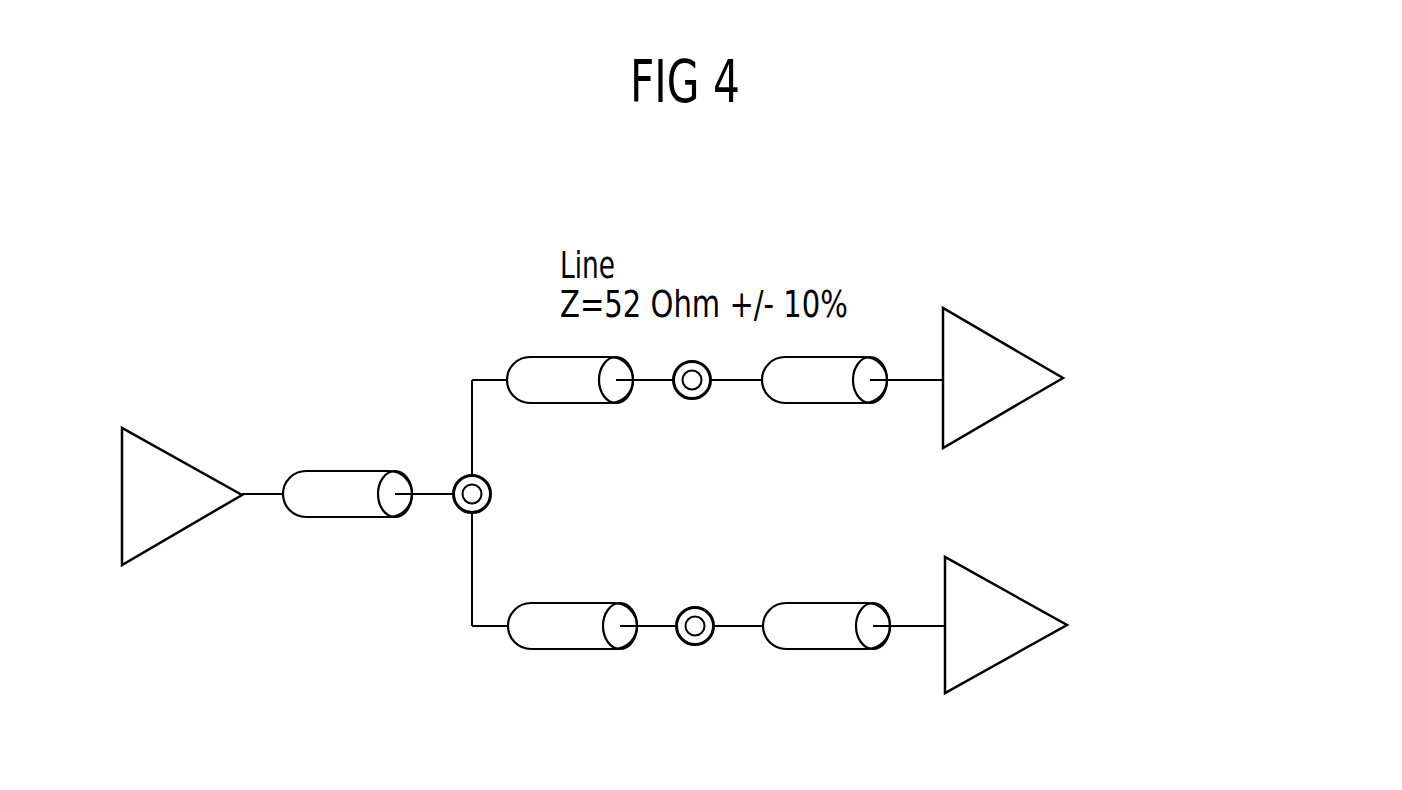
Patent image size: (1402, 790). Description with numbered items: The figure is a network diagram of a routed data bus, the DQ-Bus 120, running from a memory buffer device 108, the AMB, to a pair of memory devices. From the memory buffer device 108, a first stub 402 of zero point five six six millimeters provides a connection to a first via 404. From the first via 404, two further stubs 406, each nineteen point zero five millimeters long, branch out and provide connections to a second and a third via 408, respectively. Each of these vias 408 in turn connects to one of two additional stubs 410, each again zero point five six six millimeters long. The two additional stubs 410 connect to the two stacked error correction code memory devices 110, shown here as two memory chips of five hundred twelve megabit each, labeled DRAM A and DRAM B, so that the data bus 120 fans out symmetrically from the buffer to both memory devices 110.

The data bus (DQ-Bus) 120 is at (166, 288).
The memory buffer device (AMB) 108 is at (172, 537).
The first stub 402 is at (348, 518).
The first via 404 is at (490, 496).
The further stubs 406 is at (572, 405).
The second and third via 408 is at (693, 400).
The additional stubs 410 is at (827, 405).
The error correction code memory devices 110 is at (995, 335).